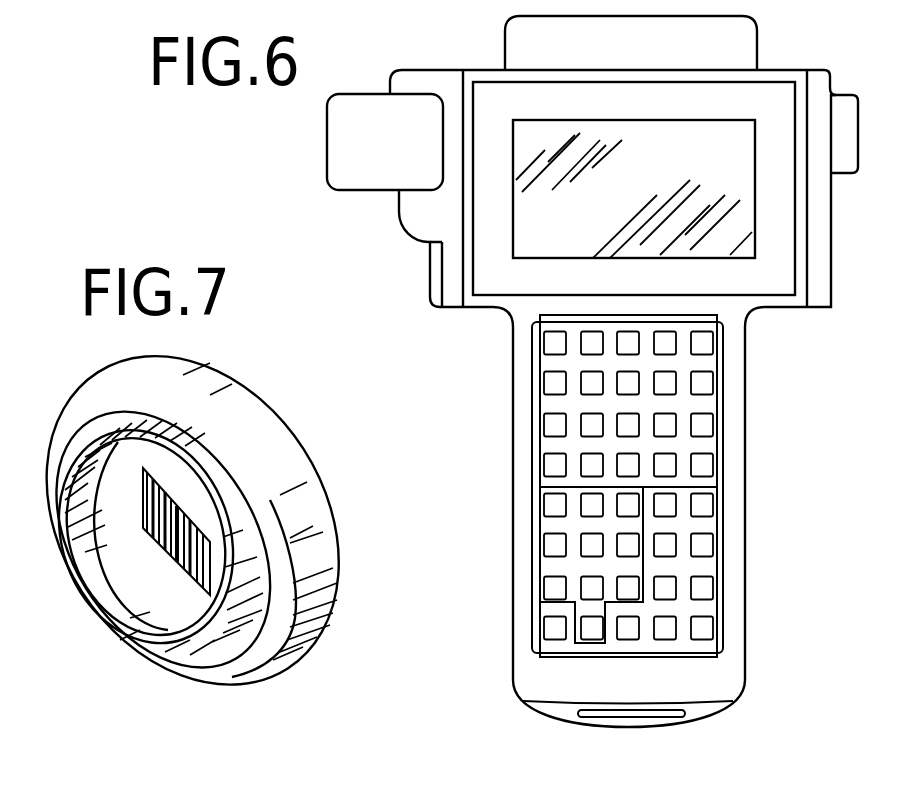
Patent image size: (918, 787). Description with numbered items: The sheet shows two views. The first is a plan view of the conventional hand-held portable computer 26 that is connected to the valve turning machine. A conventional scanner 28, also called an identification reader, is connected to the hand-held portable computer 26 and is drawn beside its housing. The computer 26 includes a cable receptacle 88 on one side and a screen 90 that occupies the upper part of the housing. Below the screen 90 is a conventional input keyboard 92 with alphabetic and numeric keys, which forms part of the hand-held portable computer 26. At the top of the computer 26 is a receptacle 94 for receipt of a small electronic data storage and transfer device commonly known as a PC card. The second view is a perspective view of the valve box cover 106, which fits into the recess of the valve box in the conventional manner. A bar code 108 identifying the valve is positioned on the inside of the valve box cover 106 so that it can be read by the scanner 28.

In FIG. 6, the hand-held portable computer 26 is at (484, 318).
In FIG. 6, the scanner 28 is at (362, 197).
In FIG. 6, the cable receptacle 88 is at (843, 140).
In FIG. 6, the screen 90 is at (741, 252).
In FIG. 6, the input keyboard 92 is at (553, 437).
In FIG. 6, the receptacle 94 is at (737, 40).
In FIG. 7, the valve box cover 106 is at (262, 382).
In FIG. 7, the bar code 108 is at (192, 545).